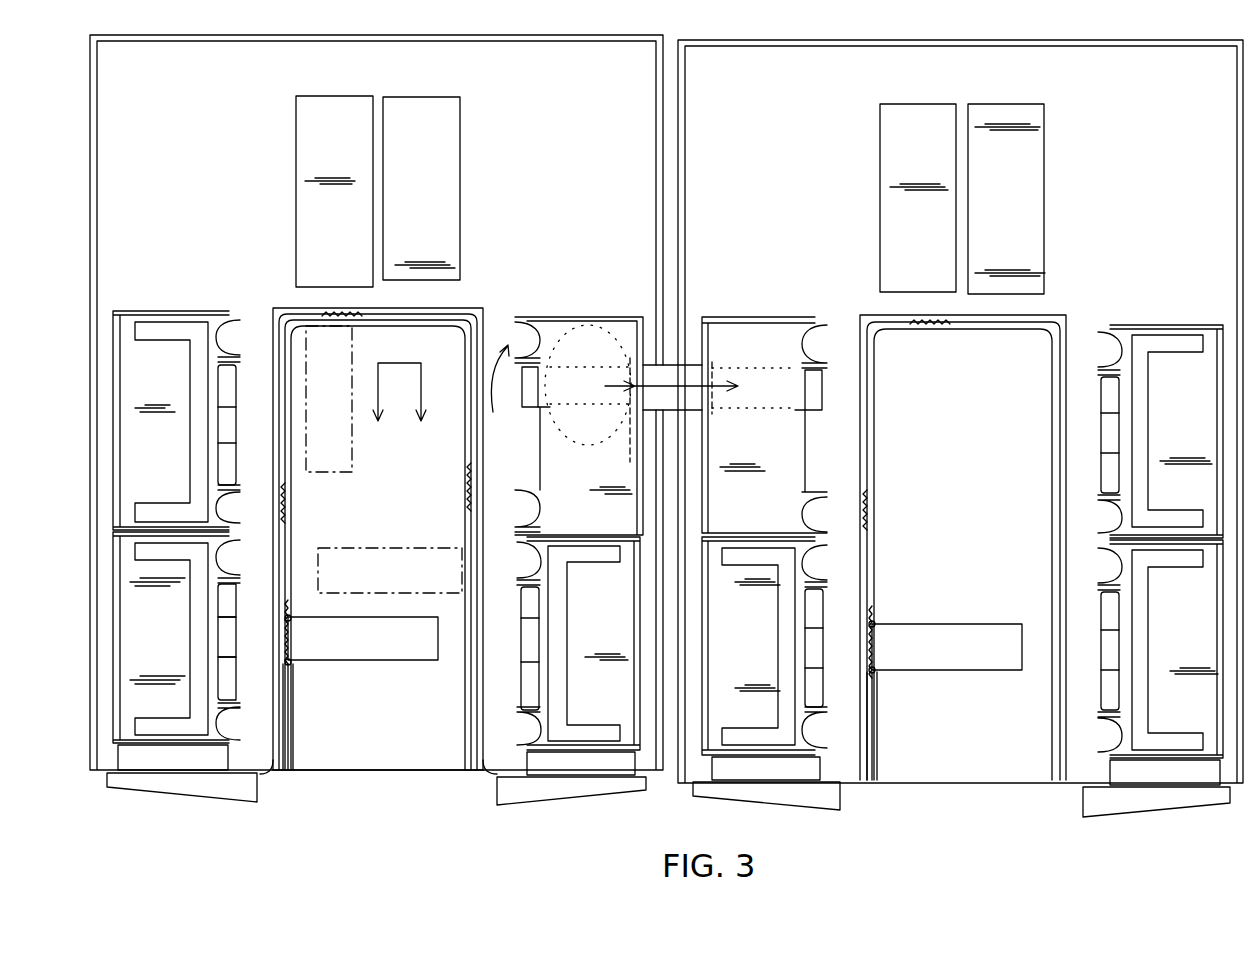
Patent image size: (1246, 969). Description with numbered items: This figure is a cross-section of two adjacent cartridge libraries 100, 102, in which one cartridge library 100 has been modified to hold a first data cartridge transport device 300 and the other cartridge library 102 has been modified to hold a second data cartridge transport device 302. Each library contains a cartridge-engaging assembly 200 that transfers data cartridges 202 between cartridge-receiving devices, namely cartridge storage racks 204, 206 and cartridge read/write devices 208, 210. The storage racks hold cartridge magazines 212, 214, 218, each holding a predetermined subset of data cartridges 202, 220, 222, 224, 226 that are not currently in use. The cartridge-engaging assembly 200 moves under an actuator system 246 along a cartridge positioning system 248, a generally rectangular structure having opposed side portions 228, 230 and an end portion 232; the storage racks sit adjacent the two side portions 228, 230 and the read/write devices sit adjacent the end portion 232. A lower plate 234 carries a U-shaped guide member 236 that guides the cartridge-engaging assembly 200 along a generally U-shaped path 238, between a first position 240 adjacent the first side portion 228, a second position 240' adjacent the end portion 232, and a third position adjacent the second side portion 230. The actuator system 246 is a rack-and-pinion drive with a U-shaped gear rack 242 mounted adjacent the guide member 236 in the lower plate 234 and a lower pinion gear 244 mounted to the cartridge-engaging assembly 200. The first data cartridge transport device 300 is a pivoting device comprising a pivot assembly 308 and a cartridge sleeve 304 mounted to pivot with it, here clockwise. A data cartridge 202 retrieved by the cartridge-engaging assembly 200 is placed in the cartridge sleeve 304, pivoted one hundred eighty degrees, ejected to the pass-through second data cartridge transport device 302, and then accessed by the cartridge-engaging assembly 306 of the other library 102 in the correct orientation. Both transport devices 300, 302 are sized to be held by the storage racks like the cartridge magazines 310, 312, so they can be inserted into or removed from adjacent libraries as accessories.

The cartridge library 100 is at (414, 454).
The cartridge library 102 is at (943, 461).
The cartridge-engaging assembly 200 is at (373, 548).
The data cartridge 202 is at (249, 637).
The cartridge storage rack 204 is at (193, 525).
The cartridge storage rack 206 is at (614, 396).
The cartridge read/write device 208 is at (358, 144).
The cartridge read/write device 210 is at (443, 154).
The cartridge magazine 212 is at (183, 469).
The cartridge magazine 214 is at (196, 637).
The cartridge magazine 218 is at (623, 626).
The data cartridge 220 is at (248, 561).
The data cartridge 222 is at (249, 600).
The data cartridge 224 is at (249, 678).
The data cartridge 226 is at (248, 721).
The side portion 228 is at (262, 773).
The side portion 230 is at (498, 773).
The end portion 232 is at (402, 537).
The lower plate 234 is at (461, 764).
The U-shaped guide member 236 is at (380, 330).
The U-shaped path 238 is at (422, 388).
The first position 240 is at (370, 662).
The second position 240' is at (358, 404).
The U-shaped gear rack 242 is at (290, 495).
The lower pinion gear 244 is at (291, 668).
The actuator system 246 is at (302, 660).
The cartridge positioning system 248 is at (296, 747).
The first data cartridge transport device 300 is at (549, 434).
The second data cartridge transport device 302 is at (744, 362).
The cartridge sleeve 304 is at (563, 407).
The cartridge-engaging assembly 306 is at (917, 673).
The pivot assembly 308 is at (597, 333).
The cartridge magazine 310 is at (604, 534).
The cartridge magazine 312 is at (764, 401).